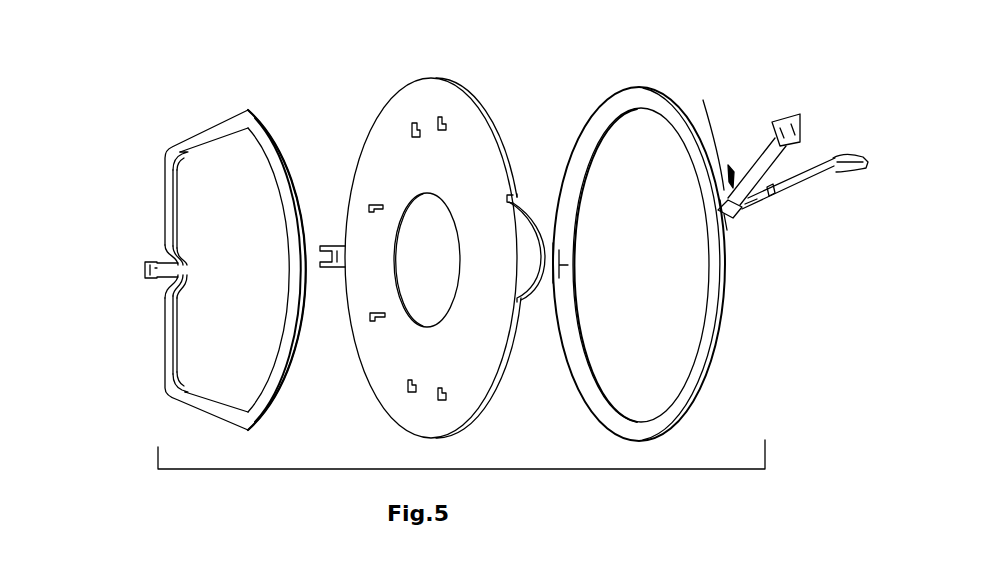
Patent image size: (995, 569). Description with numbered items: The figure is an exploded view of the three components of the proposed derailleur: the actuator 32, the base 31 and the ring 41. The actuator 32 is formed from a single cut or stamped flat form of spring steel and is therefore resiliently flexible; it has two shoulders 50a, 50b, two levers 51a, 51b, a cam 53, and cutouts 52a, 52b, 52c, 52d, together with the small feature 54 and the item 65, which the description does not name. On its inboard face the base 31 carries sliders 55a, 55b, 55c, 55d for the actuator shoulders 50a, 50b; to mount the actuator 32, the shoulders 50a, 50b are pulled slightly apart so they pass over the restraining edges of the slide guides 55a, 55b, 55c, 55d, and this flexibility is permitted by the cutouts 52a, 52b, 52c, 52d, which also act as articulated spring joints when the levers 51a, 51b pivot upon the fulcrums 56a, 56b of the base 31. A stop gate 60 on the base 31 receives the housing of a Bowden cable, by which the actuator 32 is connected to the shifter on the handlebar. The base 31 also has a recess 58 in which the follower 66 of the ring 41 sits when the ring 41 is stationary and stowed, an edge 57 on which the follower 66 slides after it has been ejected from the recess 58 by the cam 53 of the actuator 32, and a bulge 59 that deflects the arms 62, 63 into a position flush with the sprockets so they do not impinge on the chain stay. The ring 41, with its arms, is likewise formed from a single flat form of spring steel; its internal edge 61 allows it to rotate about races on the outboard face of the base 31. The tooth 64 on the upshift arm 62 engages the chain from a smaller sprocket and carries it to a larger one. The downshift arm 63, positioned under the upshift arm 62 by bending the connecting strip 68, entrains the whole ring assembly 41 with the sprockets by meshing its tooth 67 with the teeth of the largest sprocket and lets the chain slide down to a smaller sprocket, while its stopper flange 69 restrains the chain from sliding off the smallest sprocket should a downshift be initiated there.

The actuator 32 is at (206, 108).
The shoulder 50a is at (220, 128).
The shoulder 50b is at (212, 410).
The cam 53 is at (262, 132).
The cutout 52a is at (166, 155).
The lever 51a is at (168, 207).
The cutout 52c is at (170, 245).
The latch projection 54 is at (143, 265).
The cutout 52d is at (168, 298).
The lever 51b is at (168, 330).
The cutout 52b is at (167, 383).
The base 31 is at (398, 82).
The edge of the base 57 is at (502, 130).
The recess 58 is at (515, 193).
The bulge 59 is at (524, 258).
The slider 55a is at (417, 123).
The slider 55b is at (443, 117).
The slider 55c is at (410, 387).
The slider 55d is at (438, 395).
The fulcrum 56a is at (371, 208).
The fulcrum 56b is at (376, 318).
The stop gate 60 is at (328, 268).
The ring 41 is at (615, 75).
The internal edge 61 is at (600, 137).
The follower 66 is at (731, 180).
The upshift arm 62 is at (743, 178).
The connecting strip 68 is at (738, 215).
The upper arm 65 is at (766, 125).
The tooth 64 is at (793, 112).
The downshift arm 63 is at (797, 190).
The stopper flange 69 is at (770, 198).
The tooth 67 is at (833, 150).